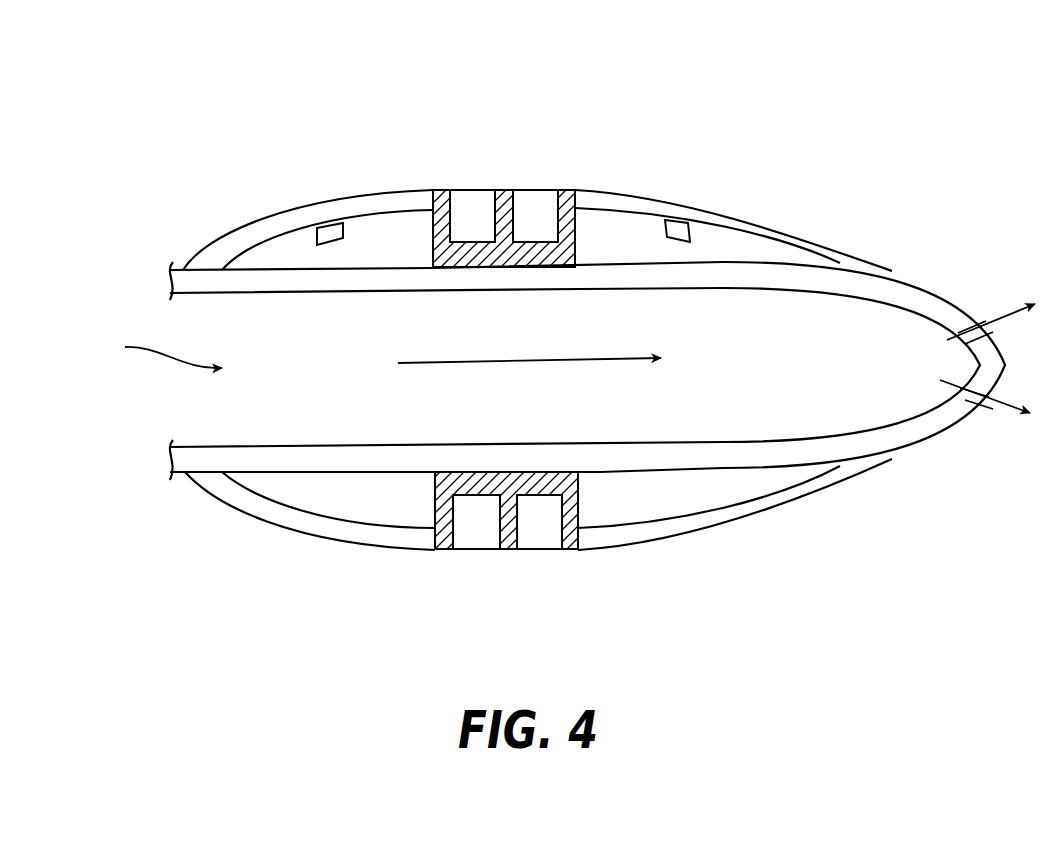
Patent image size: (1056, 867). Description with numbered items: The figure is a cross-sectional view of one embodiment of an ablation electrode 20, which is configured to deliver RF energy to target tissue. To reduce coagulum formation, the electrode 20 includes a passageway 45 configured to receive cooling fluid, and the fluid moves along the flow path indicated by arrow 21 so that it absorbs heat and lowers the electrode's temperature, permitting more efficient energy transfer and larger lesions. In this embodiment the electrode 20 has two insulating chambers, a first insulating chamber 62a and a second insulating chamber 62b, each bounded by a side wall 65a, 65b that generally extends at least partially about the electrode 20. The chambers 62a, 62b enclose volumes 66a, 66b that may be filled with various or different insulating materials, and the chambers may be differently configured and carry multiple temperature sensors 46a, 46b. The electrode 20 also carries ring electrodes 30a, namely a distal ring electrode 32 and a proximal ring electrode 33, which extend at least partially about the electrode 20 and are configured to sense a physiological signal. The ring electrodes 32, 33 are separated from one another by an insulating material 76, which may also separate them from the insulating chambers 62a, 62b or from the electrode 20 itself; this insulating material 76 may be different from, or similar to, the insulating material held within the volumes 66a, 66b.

The ablation electrode 20 is at (942, 172).
The flow path arrow 21 is at (513, 361).
The ring electrodes 30a is at (533, 92).
The distal ring electrode 32 is at (547, 229).
The proximal ring electrode 33 is at (483, 229).
The passageway 45 is at (162, 350).
The temperature sensor 46a is at (676, 226).
The temperature sensor 46b is at (333, 230).
The first insulating chamber 62a is at (753, 190).
The second insulating chamber 62b is at (320, 173).
The side wall 65a is at (812, 248).
The side wall 65b is at (243, 245).
The volume 66a is at (636, 243).
The volume 66b is at (408, 249).
The insulating material 76 is at (505, 178).